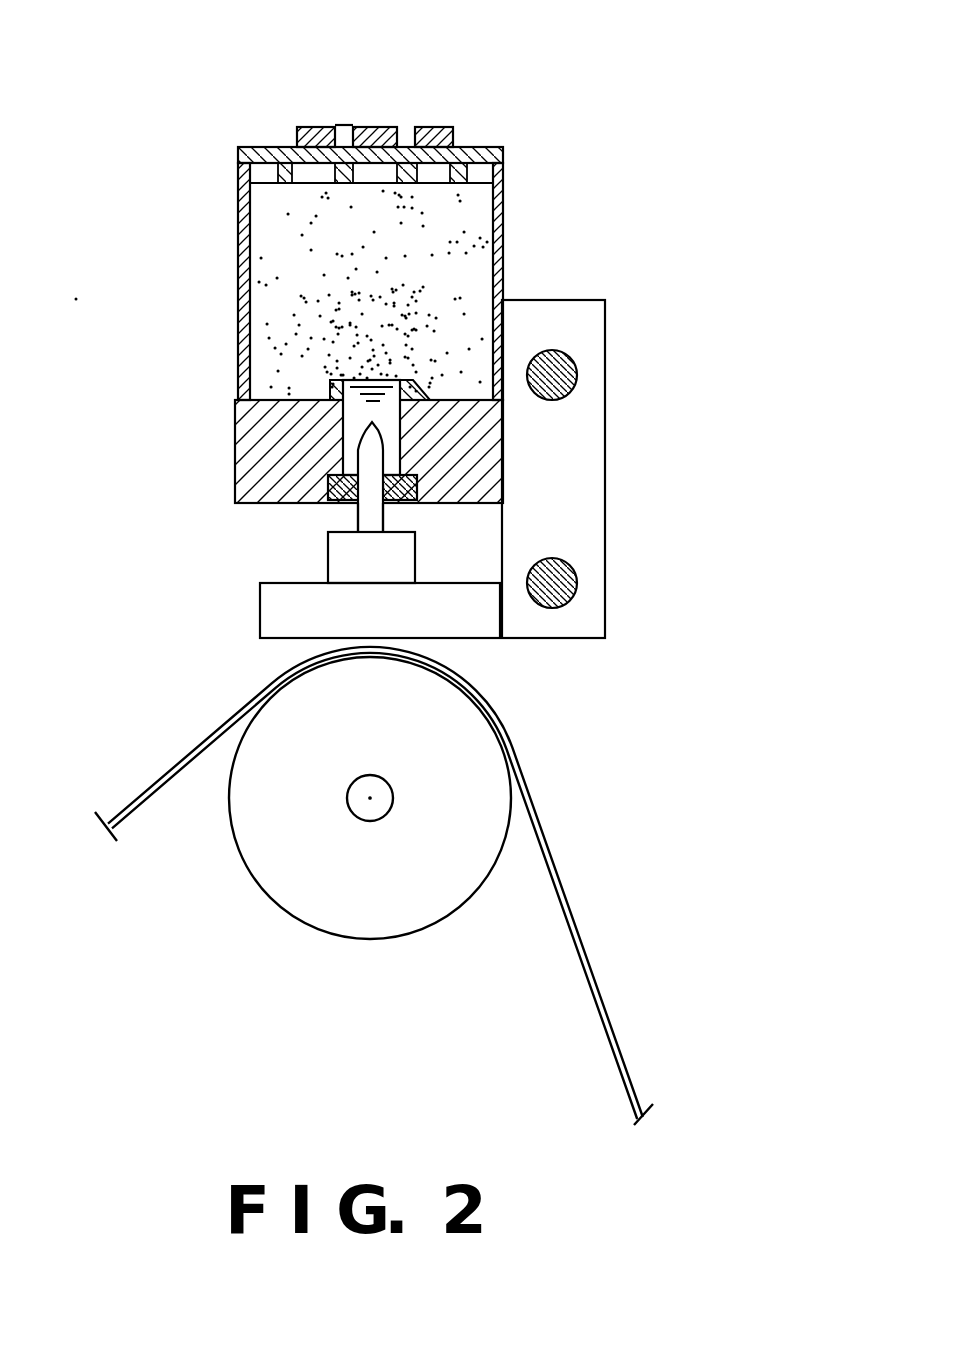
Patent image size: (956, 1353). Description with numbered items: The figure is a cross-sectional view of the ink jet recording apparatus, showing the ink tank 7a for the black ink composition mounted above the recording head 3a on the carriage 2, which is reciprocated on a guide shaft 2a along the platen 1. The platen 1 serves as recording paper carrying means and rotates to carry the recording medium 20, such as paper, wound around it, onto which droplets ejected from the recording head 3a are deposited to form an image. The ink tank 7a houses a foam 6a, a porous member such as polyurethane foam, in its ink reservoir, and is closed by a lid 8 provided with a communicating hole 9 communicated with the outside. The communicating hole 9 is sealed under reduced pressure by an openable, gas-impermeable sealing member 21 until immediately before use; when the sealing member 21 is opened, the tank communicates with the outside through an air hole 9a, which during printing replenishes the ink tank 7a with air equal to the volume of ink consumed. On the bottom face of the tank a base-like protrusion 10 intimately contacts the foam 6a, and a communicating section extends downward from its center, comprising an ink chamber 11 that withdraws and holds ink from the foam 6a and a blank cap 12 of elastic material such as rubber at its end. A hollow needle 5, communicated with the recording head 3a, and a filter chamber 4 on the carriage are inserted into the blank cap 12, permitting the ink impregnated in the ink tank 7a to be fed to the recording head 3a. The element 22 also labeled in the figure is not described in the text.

The platen 1 is at (203, 957).
The carriage 2 is at (577, 466).
The guide shaft 2a is at (568, 368).
The recording head 3a is at (277, 618).
The filter chamber 4 is at (340, 558).
The hollow needle 5 is at (357, 517).
The foam 6a is at (468, 228).
The ink tank 7a is at (244, 218).
The lid 8 is at (492, 147).
The communicating hole 9 is at (298, 131).
The air hole 9a is at (453, 128).
The protrusion 10 is at (328, 386).
The ink chamber 11 is at (357, 408).
The blank cap 12 is at (330, 496).
The recording medium 20 is at (573, 910).
The sealing member 21 is at (440, 127).
The electrode slit 22 is at (343, 125).